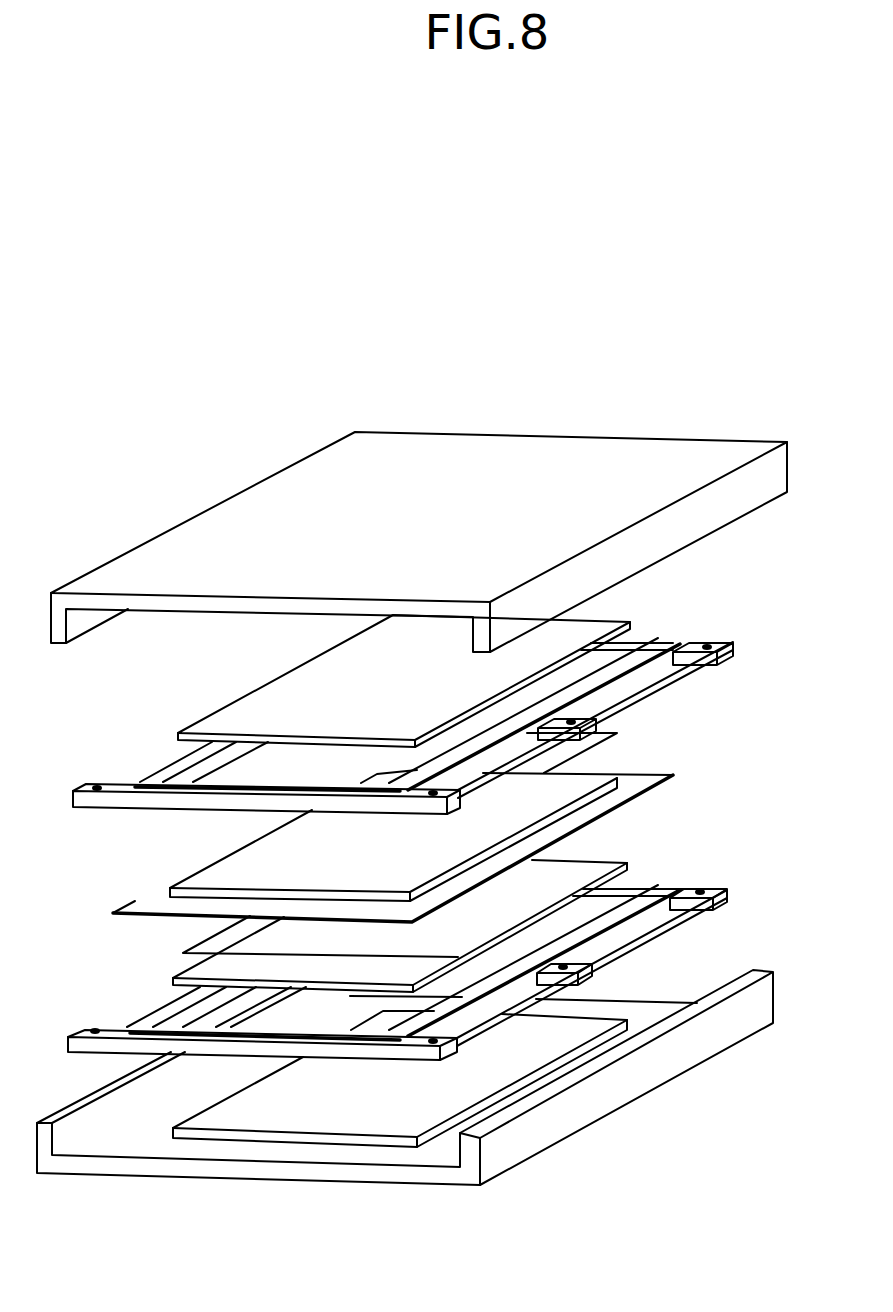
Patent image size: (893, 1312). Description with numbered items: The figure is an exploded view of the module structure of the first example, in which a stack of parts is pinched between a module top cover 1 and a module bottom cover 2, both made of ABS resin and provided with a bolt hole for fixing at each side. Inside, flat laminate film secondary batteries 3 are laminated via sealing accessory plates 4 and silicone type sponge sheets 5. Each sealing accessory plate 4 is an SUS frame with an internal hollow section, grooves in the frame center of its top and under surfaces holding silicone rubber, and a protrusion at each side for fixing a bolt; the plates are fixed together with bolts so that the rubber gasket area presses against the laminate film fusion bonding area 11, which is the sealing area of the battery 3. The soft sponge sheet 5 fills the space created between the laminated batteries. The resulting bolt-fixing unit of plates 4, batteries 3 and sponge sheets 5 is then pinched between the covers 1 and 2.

The module top cover 1 is at (153, 561).
The module bottom cover 2 is at (517, 1047).
The flat laminate film secondary battery 3 is at (553, 787).
The sealing accessory plate 4 is at (618, 688).
The sponge sheet 5 is at (593, 612).
The laminate film fusion bonding area 11 is at (147, 900).